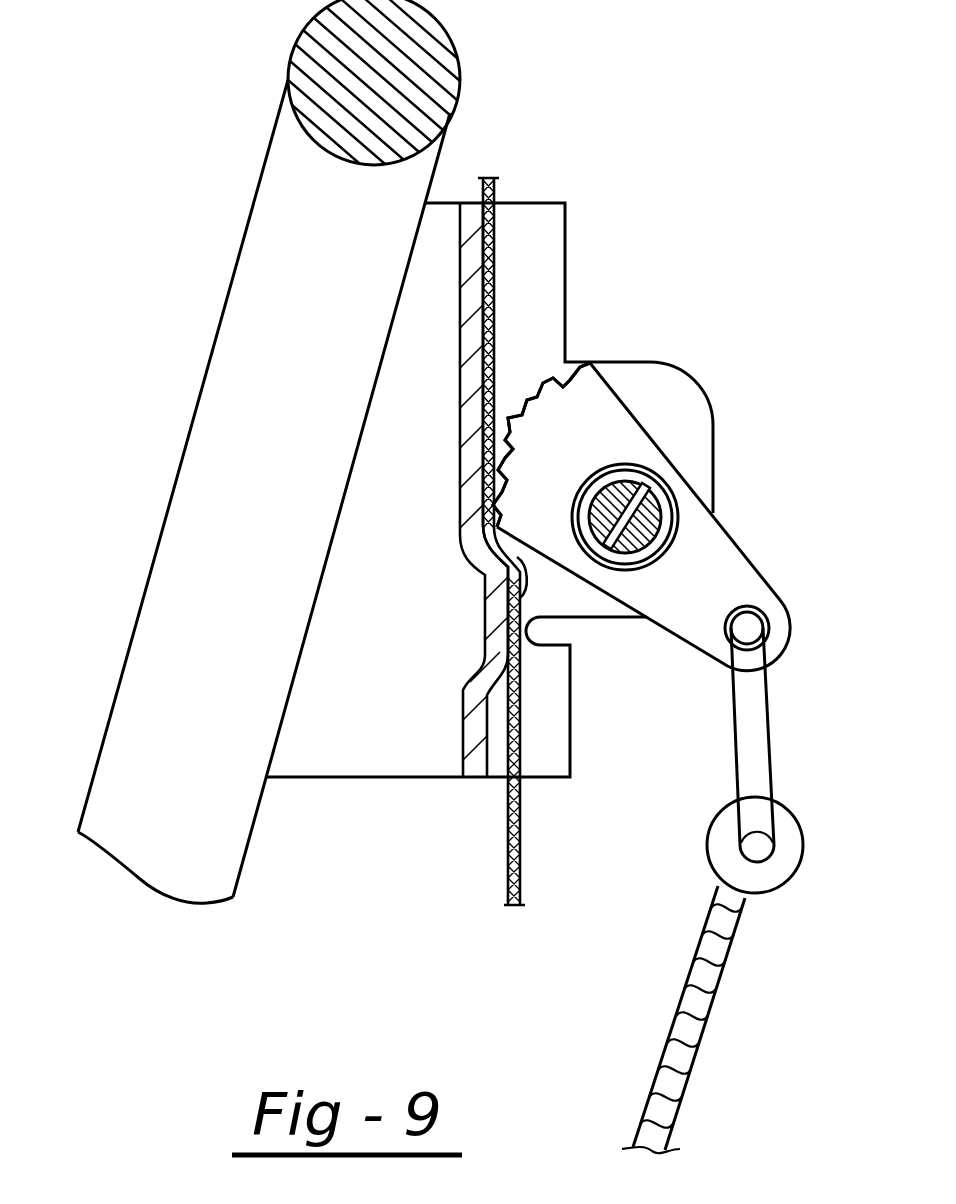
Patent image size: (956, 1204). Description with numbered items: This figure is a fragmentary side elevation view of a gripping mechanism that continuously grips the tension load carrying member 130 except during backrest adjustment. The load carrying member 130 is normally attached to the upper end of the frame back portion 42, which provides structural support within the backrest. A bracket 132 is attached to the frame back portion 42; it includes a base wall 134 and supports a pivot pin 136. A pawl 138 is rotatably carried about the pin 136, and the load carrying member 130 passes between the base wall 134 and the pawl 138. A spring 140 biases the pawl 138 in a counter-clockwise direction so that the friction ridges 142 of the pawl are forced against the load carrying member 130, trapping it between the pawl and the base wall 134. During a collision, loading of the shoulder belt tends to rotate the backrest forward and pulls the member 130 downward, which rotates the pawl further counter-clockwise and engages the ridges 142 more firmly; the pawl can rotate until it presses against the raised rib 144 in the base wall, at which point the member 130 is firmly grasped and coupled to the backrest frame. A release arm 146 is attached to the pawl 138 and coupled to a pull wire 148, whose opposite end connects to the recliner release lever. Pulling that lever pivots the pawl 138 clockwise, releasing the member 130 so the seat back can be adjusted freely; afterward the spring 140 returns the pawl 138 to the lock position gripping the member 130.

The frame back portion 42 is at (159, 531).
The tension load carrying member 130 is at (505, 833).
The bracket 132 is at (348, 773).
The base wall 134 is at (463, 737).
The pivot pin 136 is at (673, 528).
The pawl 138 is at (587, 402).
The spring 140 is at (670, 489).
The friction ridges 142 is at (527, 395).
The raised rib 144 is at (497, 603).
The release arm 146 is at (773, 733).
The pull wire 148 is at (705, 1000).